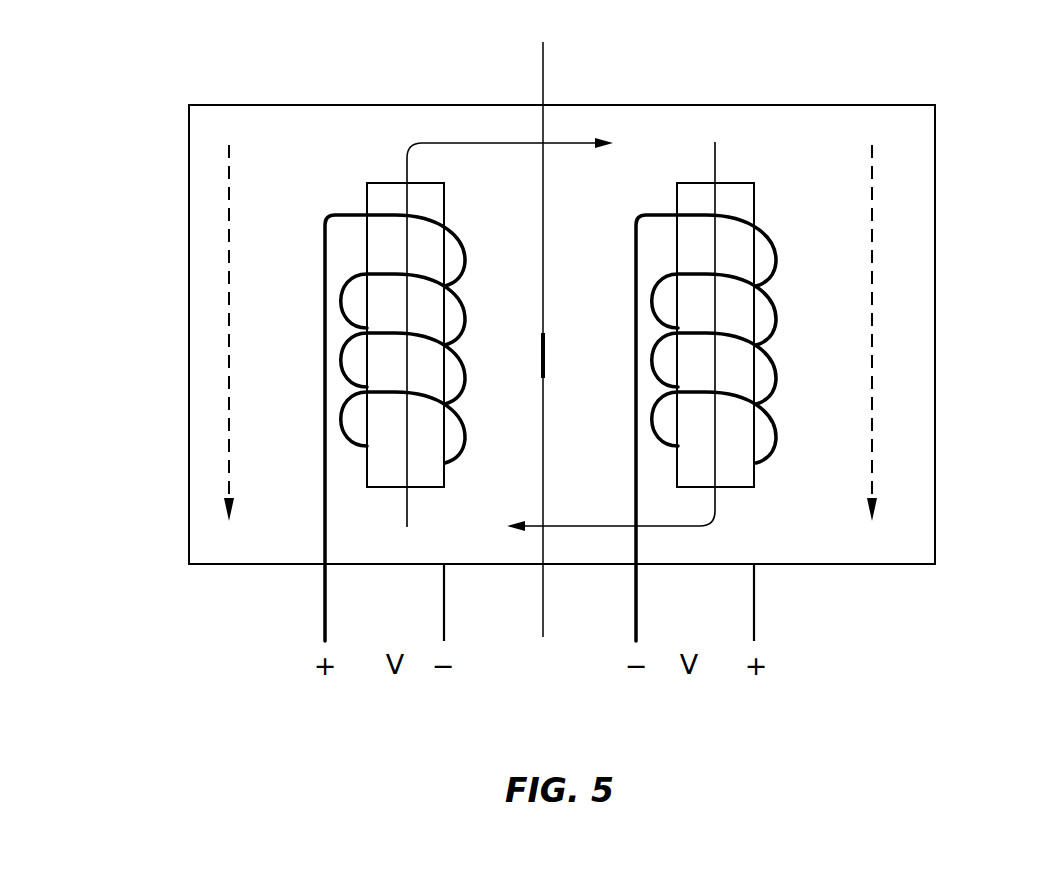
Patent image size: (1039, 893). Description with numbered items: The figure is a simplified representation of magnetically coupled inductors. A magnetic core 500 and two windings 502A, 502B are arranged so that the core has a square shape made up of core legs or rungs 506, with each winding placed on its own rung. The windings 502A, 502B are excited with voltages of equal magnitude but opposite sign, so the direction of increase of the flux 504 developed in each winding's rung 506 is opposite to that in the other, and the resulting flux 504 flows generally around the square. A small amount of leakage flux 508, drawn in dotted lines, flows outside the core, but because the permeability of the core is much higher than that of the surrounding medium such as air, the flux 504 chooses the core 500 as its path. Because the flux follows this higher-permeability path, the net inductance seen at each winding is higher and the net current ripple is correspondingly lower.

The magnetic core 500 is at (212, 131).
The winding 502A is at (458, 282).
The winding 502B is at (635, 312).
The flux 504 is at (408, 157).
The core legs or rungs 506 is at (690, 197).
The leakage flux 508 is at (228, 363).